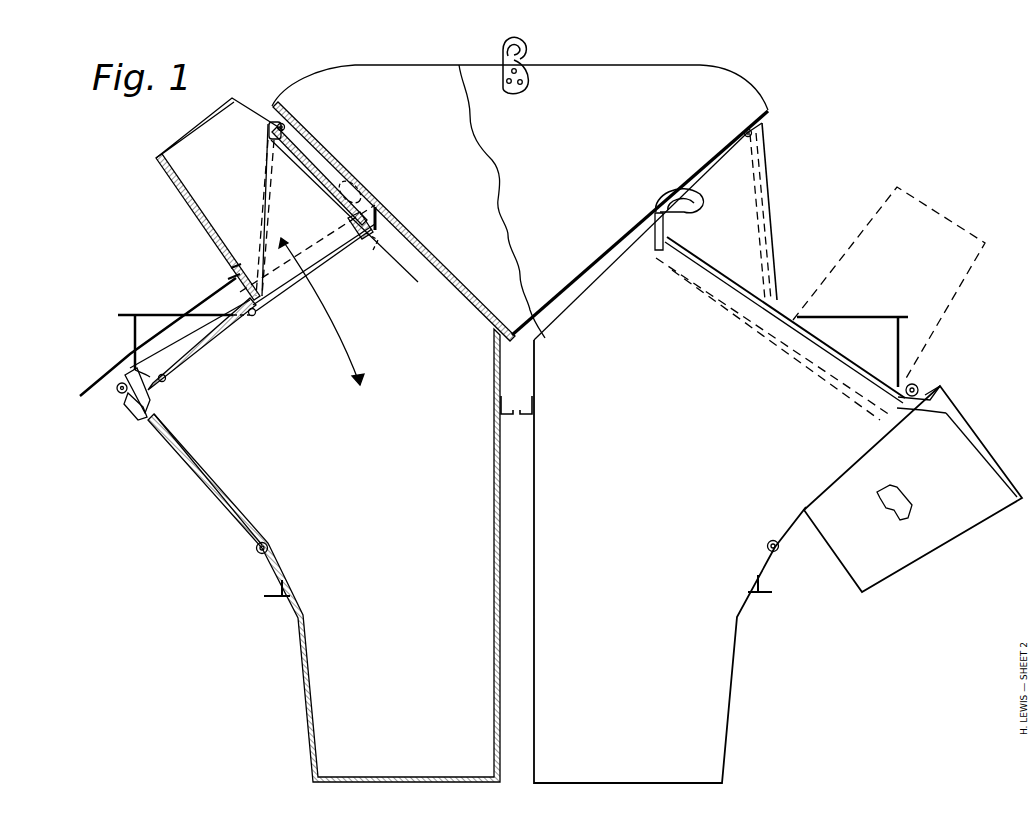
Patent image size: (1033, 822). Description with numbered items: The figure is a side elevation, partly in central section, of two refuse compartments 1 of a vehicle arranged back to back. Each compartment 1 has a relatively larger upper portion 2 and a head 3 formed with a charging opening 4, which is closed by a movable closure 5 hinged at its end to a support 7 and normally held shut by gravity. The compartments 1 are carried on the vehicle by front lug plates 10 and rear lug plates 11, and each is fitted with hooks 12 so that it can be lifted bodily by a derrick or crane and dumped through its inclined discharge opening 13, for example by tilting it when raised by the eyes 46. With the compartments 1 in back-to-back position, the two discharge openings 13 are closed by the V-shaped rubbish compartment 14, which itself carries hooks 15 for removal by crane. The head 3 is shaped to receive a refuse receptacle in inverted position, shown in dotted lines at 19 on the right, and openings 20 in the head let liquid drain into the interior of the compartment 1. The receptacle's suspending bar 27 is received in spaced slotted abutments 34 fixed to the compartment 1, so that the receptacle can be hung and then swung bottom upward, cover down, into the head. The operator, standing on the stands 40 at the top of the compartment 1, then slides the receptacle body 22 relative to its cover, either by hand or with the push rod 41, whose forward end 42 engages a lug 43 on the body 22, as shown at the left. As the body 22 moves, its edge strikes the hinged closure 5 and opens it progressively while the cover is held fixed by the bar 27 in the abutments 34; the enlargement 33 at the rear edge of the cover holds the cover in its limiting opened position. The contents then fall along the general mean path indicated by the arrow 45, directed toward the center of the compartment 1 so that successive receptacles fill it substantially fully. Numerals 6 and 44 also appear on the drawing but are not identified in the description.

The refuse compartment 1 is at (477, 458).
The upper portion 2 is at (246, 479).
The head 3 is at (226, 345).
The charging opening 4 is at (283, 303).
The movable closure 5 is at (322, 176).
The pivot bolt 6 is at (288, 123).
The support 7 is at (274, 117).
The front lug plates 10 is at (262, 598).
The rear lug plates 11 is at (528, 416).
The hooks 12 is at (352, 192).
The discharge opening 13 is at (462, 288).
The rubbish compartment 14 is at (520, 203).
The hooks 15 is at (525, 50).
The receptacle in inverted position 19 is at (889, 283).
The openings 20 is at (152, 412).
The body 22 is at (146, 192).
The suspending bar 27 is at (114, 390).
The enlargement 33 is at (372, 228).
The slotted abutments 34 is at (124, 410).
The stands 40 is at (140, 313).
The push rod 41 is at (115, 362).
The forward end 42 is at (226, 277).
The lug 43 is at (228, 266).
The bracket plate 44 is at (292, 198).
The arrow 45 is at (340, 322).
The eyes 46 is at (255, 549).